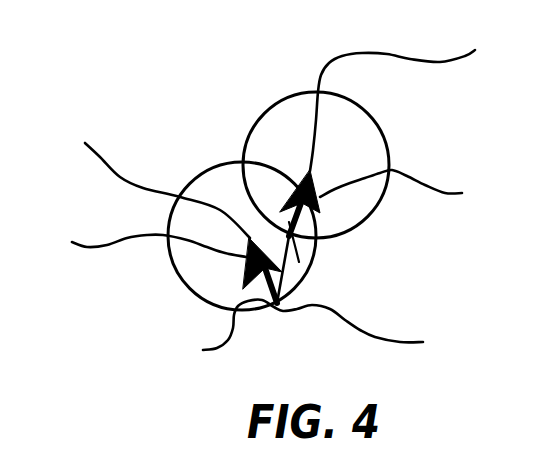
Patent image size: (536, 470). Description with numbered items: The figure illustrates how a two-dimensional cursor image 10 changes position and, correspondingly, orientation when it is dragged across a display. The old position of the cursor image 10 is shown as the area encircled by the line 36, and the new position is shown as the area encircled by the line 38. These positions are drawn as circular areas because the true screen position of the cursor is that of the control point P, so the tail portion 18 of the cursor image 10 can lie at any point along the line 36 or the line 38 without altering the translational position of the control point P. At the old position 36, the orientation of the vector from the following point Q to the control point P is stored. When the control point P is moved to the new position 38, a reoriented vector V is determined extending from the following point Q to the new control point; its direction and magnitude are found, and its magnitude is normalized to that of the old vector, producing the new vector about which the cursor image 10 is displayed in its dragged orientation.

The cursor image 10 is at (263, 213).
The tail portion 18 is at (298, 336).
The line encircling old position 36 is at (179, 277).
The line encircling new position 38 is at (360, 106).
The control point P is at (278, 133).
The following point Q is at (293, 240).
The reoriented vector V is at (293, 262).